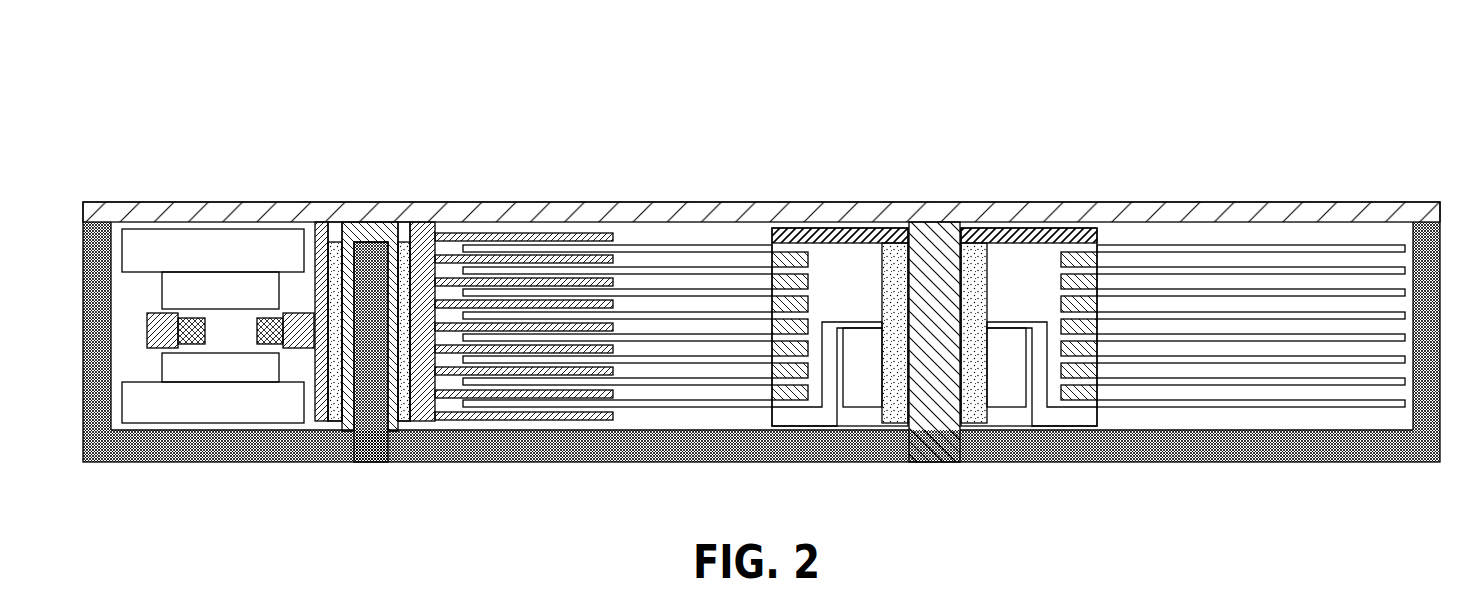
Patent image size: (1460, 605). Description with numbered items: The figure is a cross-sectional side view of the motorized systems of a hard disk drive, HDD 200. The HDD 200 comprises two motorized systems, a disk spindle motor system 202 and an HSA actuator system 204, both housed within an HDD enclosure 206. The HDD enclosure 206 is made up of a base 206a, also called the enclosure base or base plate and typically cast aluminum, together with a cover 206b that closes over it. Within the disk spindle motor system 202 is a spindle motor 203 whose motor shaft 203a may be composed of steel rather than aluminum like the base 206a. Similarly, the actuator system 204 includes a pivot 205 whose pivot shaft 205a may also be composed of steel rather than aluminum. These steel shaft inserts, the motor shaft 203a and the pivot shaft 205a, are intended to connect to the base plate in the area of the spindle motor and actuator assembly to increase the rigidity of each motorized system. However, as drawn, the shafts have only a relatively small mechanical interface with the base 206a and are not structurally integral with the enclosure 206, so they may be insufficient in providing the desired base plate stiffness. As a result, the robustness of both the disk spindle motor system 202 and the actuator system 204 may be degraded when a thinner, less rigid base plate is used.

The HDD 200 is at (292, 77).
The disk spindle motor system 202 is at (978, 222).
The spindle motor 203 is at (1022, 270).
The motor shaft 203a is at (930, 418).
The HSA actuator system 204 is at (375, 220).
The pivot 205 is at (402, 425).
The pivot shaft 205a is at (353, 425).
The HDD enclosure 206 is at (1253, 466).
The base 206a is at (1445, 400).
The cover 206b is at (1348, 208).